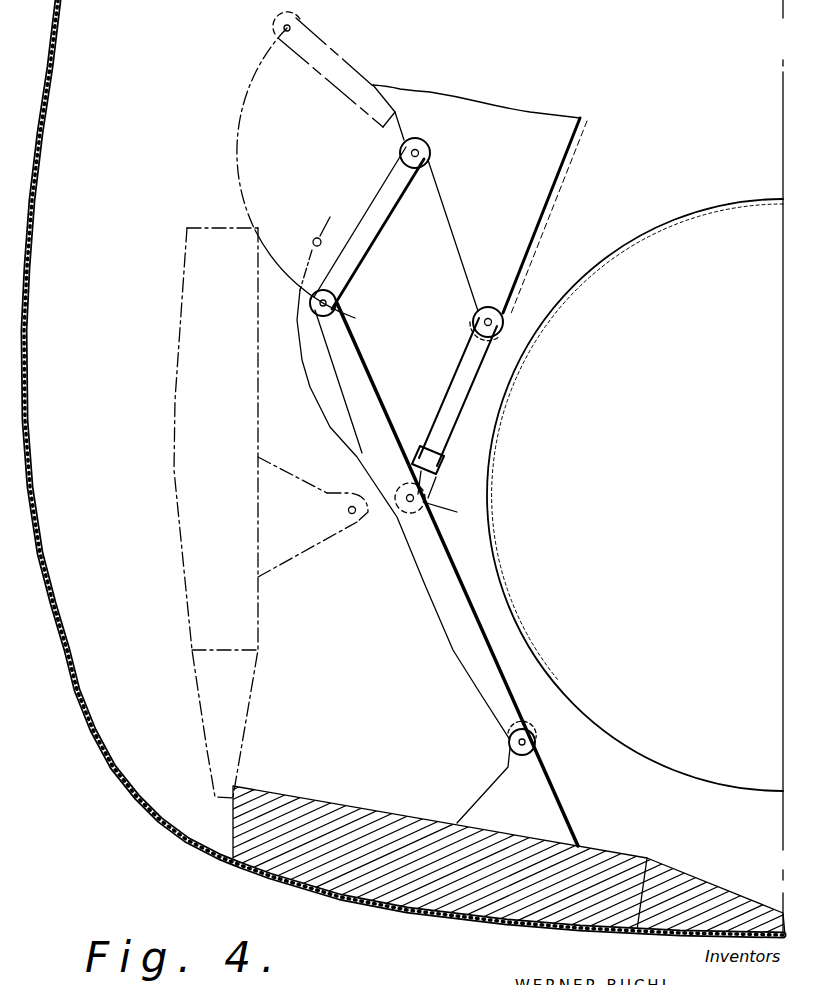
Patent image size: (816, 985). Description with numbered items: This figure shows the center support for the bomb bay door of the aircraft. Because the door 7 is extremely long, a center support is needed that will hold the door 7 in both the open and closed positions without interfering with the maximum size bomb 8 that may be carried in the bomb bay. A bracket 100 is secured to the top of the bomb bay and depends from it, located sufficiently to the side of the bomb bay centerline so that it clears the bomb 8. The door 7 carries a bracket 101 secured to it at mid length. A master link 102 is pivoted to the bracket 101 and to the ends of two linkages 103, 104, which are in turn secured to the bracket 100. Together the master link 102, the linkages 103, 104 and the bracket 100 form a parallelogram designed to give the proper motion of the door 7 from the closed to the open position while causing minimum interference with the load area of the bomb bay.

The door 7 is at (410, 903).
The bomb 8 is at (627, 243).
The bracket 100 is at (553, 135).
The bracket at mid length 101 is at (542, 788).
The master link 102 is at (458, 620).
The linkage 103 is at (390, 192).
The linkage 104 is at (453, 403).